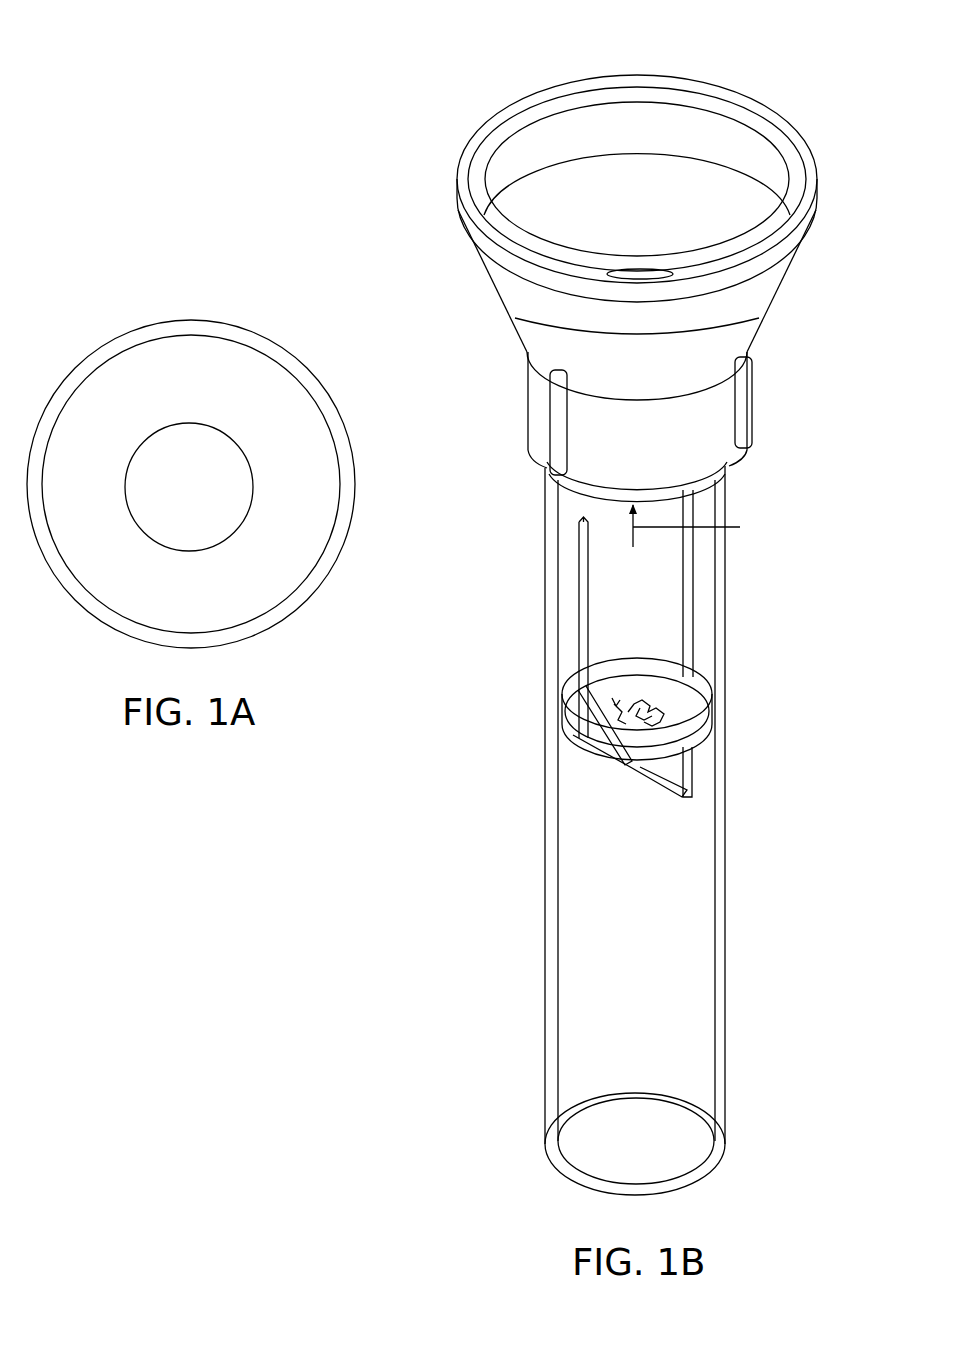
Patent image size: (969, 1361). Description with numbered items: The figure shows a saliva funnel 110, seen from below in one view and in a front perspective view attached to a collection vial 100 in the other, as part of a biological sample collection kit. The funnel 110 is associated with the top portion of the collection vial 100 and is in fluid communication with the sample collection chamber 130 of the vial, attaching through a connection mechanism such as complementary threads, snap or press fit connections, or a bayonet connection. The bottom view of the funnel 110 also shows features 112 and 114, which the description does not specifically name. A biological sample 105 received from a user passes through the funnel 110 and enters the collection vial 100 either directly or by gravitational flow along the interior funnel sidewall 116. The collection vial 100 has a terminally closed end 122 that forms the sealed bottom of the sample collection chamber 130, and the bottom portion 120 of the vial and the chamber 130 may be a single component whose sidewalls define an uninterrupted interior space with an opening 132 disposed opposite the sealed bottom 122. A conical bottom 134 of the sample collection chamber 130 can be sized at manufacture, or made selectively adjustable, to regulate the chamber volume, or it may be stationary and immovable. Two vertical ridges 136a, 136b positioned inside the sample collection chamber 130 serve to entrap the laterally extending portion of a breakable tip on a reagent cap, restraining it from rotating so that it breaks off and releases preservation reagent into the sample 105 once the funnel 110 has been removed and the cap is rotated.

In FIG. 1B, the collection vial 100 is at (654, 619).
In FIG. 1B, the biological sample 105 is at (667, 723).
In FIG. 1A, the funnel 110 is at (234, 308).
In FIG. 1B, the funnel 110 is at (628, 273).
In FIG. 1A, the funnel rim / bowl 112 is at (343, 472).
In FIG. 1B, the funnel rim / bowl 112 is at (505, 206).
In FIG. 1A, the funnel outlet opening 114 is at (188, 552).
In FIG. 1B, the funnel outlet opening 114 is at (642, 268).
In FIG. 1B, the interior funnel sidewall 116 is at (748, 332).
In FIG. 1B, the bottom portion of the collection vial 120 is at (674, 830).
In FIG. 1B, the terminally closed end 122 is at (725, 1158).
In FIG. 1B, the sample collection chamber 130 is at (630, 648).
In FIG. 1B, the opening 132 is at (708, 526).
In FIG. 1B, the conical bottom 134 is at (589, 755).
In FIG. 1B, the vertical ridge 136a is at (573, 603).
In FIG. 1B, the vertical ridge 136b is at (699, 606).